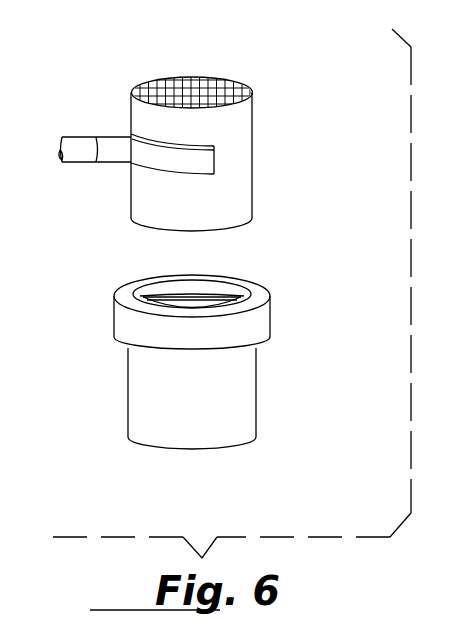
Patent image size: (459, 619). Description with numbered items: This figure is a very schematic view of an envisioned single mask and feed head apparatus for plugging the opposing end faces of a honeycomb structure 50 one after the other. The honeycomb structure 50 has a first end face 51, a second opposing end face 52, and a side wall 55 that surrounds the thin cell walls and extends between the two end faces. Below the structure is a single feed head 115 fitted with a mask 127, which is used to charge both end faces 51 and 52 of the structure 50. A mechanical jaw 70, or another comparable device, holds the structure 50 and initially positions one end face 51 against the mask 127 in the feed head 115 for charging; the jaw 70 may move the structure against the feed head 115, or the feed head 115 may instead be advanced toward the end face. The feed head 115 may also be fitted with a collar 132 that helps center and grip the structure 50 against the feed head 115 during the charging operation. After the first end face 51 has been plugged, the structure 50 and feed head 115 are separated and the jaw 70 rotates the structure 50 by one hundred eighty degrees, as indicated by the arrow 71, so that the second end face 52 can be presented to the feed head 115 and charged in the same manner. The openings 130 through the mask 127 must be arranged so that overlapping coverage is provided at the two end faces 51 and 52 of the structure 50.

The honeycomb structure 50 is at (205, 141).
The first end face 51 is at (244, 230).
The second opposing end face 52 is at (222, 72).
The side wall 55 is at (240, 184).
The mechanical jaw 70 is at (87, 154).
The arrow 71 is at (98, 169).
The feed head 115 is at (260, 404).
The mask 127 is at (180, 296).
The openings 130 is at (230, 296).
The collar 132 is at (219, 299).